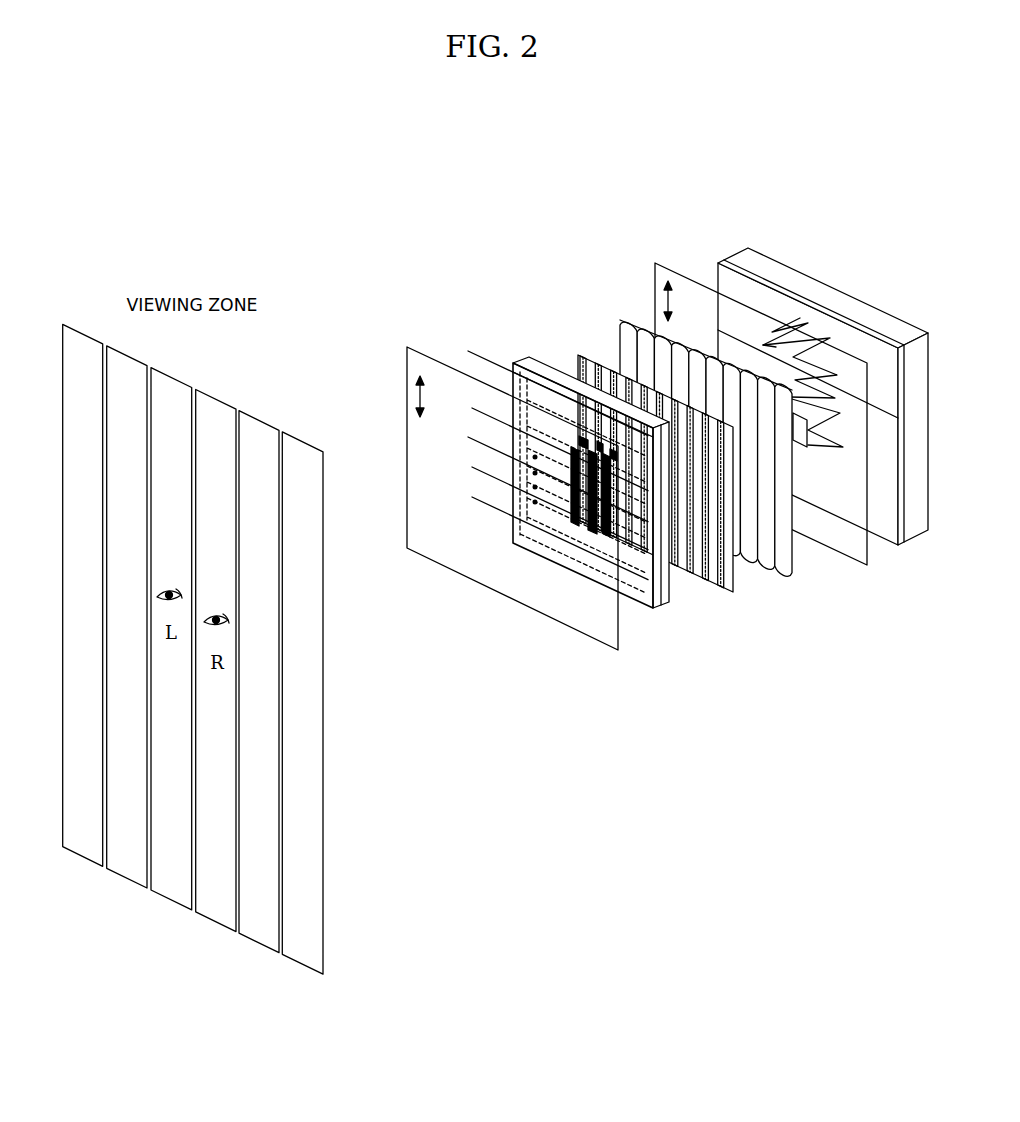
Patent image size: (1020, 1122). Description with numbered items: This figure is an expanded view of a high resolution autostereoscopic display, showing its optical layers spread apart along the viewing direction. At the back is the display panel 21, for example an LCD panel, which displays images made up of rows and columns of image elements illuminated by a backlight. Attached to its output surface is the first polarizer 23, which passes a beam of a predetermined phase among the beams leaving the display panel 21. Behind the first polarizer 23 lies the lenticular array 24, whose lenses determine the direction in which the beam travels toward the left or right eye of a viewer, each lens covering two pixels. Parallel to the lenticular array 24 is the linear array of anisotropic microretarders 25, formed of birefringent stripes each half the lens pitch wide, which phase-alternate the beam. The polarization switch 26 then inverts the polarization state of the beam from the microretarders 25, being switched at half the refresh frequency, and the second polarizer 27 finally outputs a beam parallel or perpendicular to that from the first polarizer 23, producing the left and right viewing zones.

The display panel 21 is at (718, 260).
The first polarizer 23 is at (655, 263).
The lenticular array 24 is at (620, 318).
The microretarders 25 is at (580, 355).
The polarization switch 26 is at (670, 605).
The second polarizer 27 is at (618, 650).